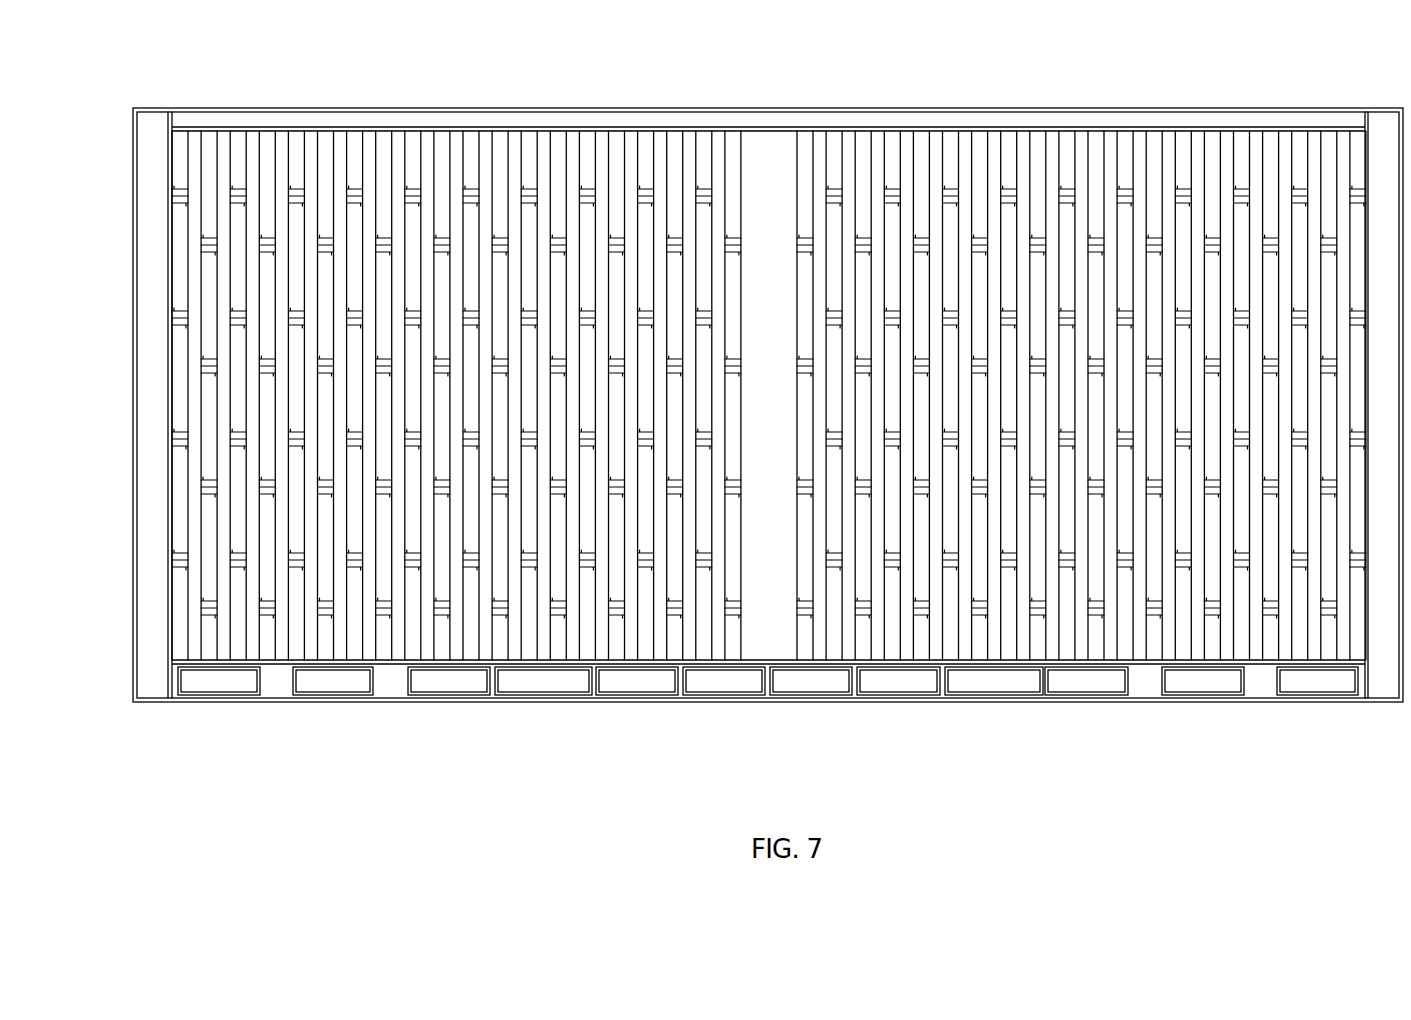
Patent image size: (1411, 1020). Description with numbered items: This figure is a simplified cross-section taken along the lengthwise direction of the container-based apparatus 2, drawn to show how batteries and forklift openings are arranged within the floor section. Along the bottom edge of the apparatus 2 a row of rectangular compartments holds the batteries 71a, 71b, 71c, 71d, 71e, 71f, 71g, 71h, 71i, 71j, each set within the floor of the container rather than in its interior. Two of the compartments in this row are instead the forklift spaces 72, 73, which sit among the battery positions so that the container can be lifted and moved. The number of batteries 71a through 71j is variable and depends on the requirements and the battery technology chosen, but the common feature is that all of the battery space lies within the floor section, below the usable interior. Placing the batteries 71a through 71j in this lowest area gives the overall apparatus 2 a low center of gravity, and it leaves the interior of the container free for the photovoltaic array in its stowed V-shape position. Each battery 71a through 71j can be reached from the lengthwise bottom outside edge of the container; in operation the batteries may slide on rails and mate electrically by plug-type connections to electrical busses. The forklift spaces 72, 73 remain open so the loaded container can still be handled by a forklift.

The apparatus 2 is at (659, 80).
The battery 71a is at (1333, 684).
The battery 71b is at (1198, 684).
The battery 71c is at (1078, 684).
The battery 71d is at (930, 686).
The battery 71e is at (830, 686).
The battery 71f is at (730, 686).
The battery 71g is at (630, 686).
The battery 71h is at (475, 686).
The battery 71i is at (340, 686).
The battery 71j is at (221, 686).
The forklift space 72 is at (1000, 686).
The forklift space 73 is at (555, 686).